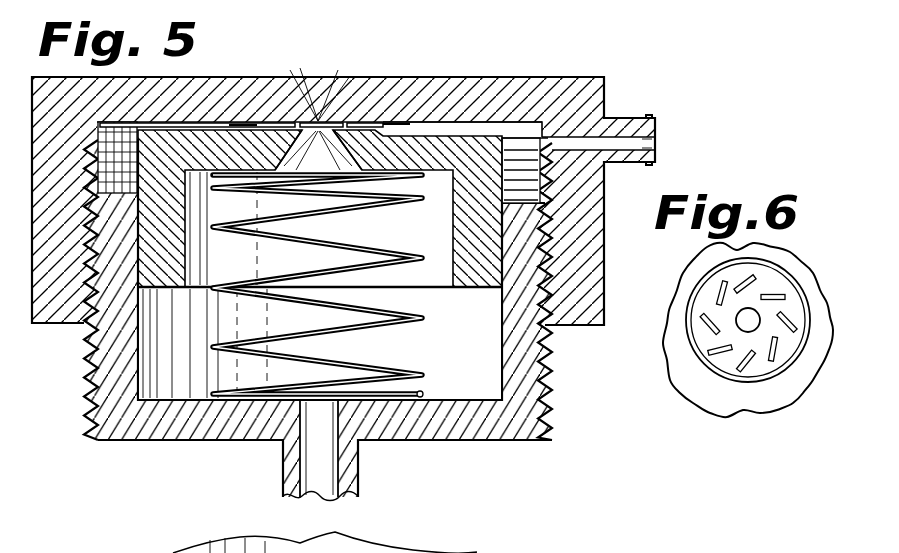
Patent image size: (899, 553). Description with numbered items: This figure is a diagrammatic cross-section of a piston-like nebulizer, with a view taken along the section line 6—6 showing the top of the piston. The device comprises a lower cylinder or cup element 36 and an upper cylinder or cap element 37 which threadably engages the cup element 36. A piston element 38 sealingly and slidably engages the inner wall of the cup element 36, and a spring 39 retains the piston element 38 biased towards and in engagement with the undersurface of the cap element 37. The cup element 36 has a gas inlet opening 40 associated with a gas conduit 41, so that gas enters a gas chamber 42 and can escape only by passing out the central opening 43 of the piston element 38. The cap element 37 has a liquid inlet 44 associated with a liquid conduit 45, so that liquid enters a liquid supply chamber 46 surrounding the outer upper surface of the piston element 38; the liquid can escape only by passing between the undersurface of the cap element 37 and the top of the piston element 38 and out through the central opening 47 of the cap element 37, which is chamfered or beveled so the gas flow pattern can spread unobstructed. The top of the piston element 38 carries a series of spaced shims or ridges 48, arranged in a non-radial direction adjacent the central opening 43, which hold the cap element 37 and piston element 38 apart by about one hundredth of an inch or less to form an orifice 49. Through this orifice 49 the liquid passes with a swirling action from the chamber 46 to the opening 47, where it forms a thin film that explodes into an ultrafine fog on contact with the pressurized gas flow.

In FIG. 5, the section line 6— 6 is at (243, 112).
In FIG. 5, the cup element 36 is at (462, 423).
In FIG. 5, the cap element 37 is at (484, 100).
In FIG. 5, the piston element 38 is at (476, 270).
In FIG. 6, the piston element 38 is at (680, 362).
In FIG. 5, the spring 39 is at (398, 325).
In FIG. 5, the gas inlet opening 40 is at (324, 466).
In FIG. 5, the gas conduit 41 is at (287, 466).
In FIG. 5, the gas chamber 42 is at (165, 355).
In FIG. 5, the central opening of piston element 43 is at (318, 152).
In FIG. 6, the central opening of piston element 43 is at (746, 333).
In FIG. 5, the liquid inlet 44 is at (657, 142).
In FIG. 5, the liquid conduit 45 is at (642, 116).
In FIG. 5, the liquid supply chamber 46 is at (525, 137).
In FIG. 5, the central opening of cap element 47 is at (319, 110).
In FIG. 5, the shims or ridges 48 is at (298, 118).
In FIG. 6, the shims or ridges 48 is at (787, 352).
In FIG. 5, the orifice 49 is at (305, 116).